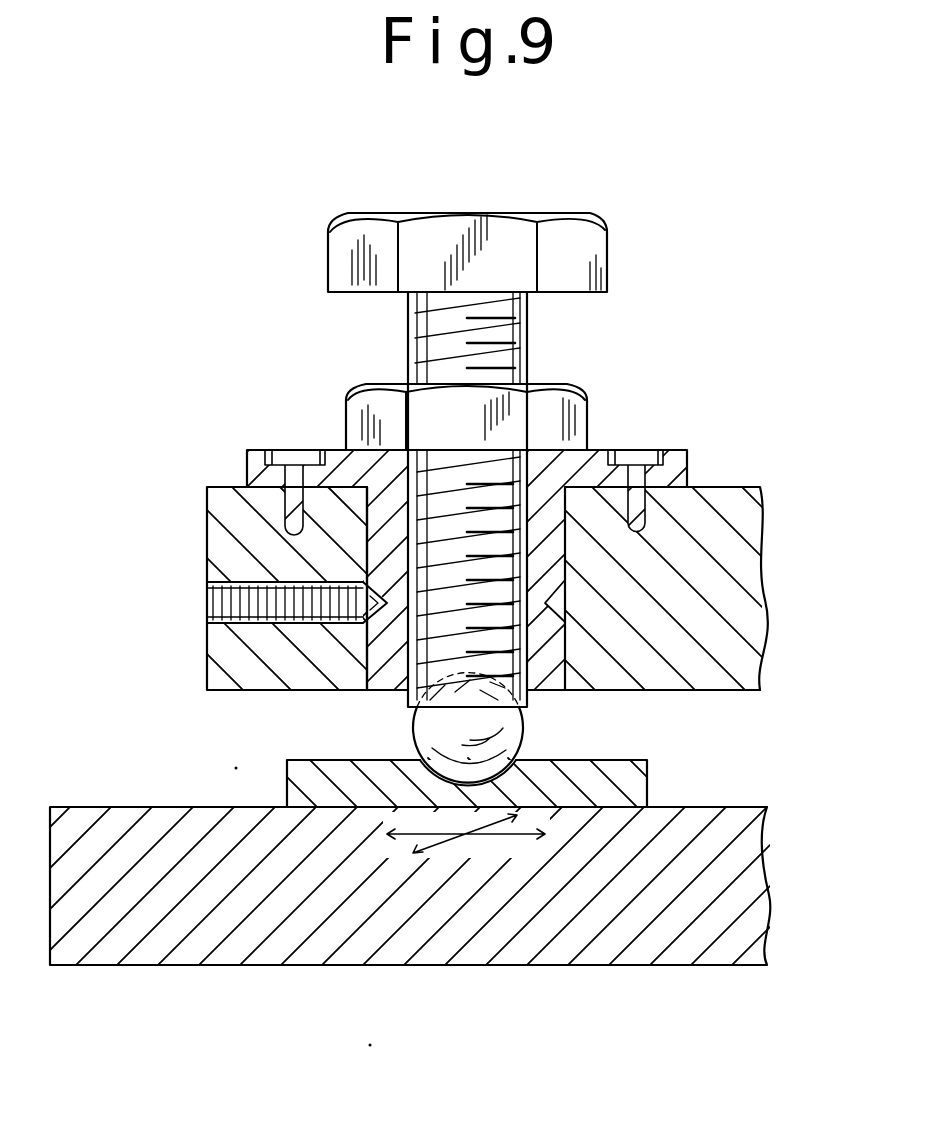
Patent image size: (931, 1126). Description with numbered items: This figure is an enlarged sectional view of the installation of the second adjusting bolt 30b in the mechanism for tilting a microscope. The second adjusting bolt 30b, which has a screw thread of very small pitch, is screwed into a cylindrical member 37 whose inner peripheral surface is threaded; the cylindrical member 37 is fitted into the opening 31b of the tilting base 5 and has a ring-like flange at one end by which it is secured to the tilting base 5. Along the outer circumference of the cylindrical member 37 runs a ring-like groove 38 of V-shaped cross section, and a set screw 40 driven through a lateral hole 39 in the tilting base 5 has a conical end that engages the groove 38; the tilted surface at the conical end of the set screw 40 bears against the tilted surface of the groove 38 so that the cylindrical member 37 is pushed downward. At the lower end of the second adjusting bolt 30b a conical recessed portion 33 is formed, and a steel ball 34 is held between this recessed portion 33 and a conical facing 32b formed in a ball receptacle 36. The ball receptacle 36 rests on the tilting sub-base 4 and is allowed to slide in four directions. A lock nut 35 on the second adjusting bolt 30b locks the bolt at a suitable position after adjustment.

The second adjusting bolt 30b is at (578, 256).
The lock nut 35 is at (567, 417).
The cylindrical member 37 is at (567, 560).
The tilting base 5 is at (746, 571).
The groove 38 is at (547, 603).
The lateral hole 39 is at (252, 618).
The set screw 40 is at (312, 627).
The conical recessed portion 33 is at (408, 716).
The steel ball 34 is at (510, 729).
The opening 31b is at (530, 623).
The conical facing 32b is at (490, 778).
The ball receptacle 36 is at (650, 782).
The tilting sub-base 4 is at (748, 882).